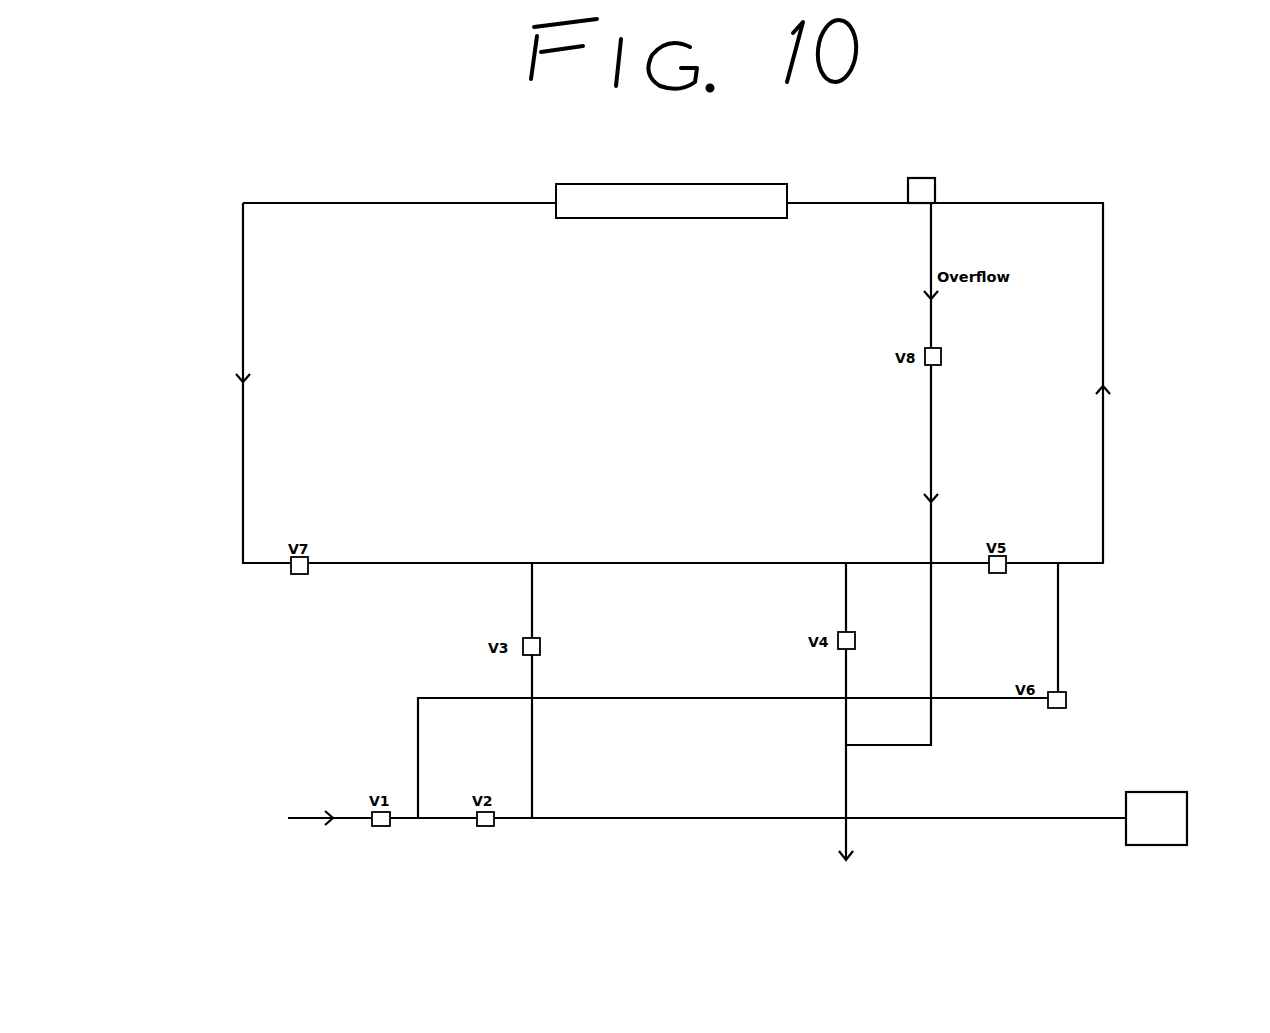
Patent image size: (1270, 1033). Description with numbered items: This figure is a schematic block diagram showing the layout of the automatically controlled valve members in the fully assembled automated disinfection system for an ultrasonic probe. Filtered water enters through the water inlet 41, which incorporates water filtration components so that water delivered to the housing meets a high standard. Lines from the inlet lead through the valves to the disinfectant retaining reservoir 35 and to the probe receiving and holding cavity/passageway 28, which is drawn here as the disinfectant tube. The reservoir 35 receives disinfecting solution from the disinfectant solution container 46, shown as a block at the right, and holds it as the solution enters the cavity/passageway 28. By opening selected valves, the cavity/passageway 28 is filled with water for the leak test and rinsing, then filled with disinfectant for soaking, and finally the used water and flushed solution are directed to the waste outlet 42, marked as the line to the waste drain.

The probe receiving and holding cavity/passageway 28 is at (773, 181).
The disinfectant retaining reservoir 35 is at (765, 338).
The water inlet 41 is at (305, 820).
The waste outlet 42 is at (848, 843).
The disinfectant solution container 46 is at (1178, 838).